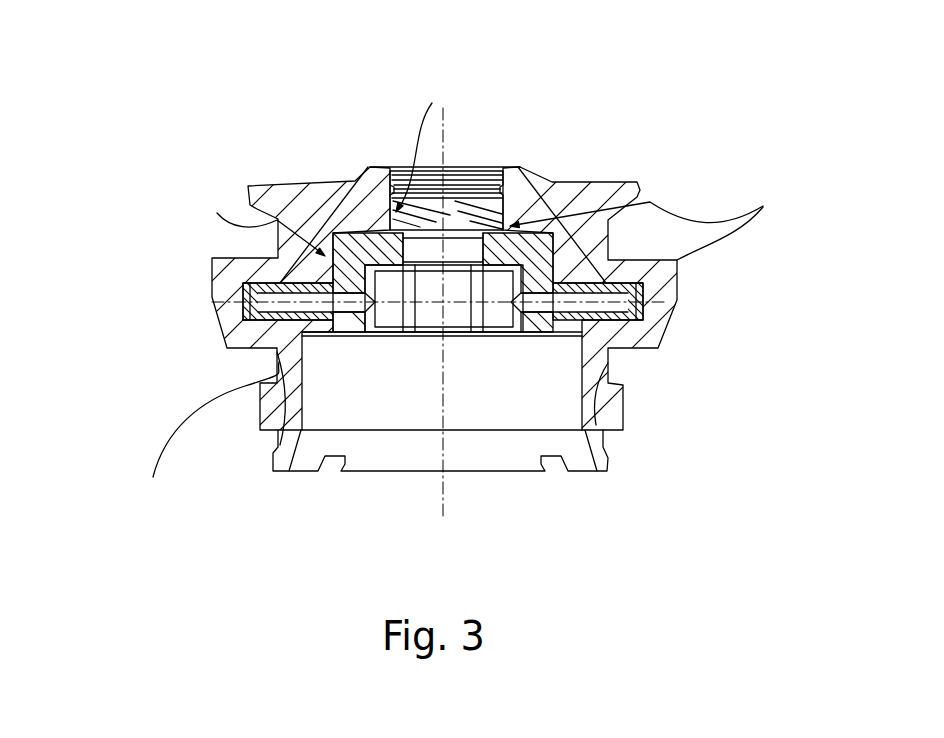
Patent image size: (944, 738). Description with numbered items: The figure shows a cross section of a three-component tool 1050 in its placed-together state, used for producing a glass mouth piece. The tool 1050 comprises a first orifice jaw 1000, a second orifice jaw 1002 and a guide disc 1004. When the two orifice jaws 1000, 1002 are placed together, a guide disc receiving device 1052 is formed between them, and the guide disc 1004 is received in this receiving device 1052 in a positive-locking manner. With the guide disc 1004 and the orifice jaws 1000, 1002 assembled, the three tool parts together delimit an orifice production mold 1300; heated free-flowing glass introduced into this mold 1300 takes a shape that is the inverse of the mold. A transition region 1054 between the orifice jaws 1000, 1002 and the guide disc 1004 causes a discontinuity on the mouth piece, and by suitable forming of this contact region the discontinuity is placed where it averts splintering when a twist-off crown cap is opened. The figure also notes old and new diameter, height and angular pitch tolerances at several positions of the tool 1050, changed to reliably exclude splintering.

The tool 1050 is at (434, 301).
The first orifice jaw 1000 is at (305, 202).
The guide disc 1004 is at (370, 473).
The second orifice jaw 1002 is at (522, 172).
The transition region 1054 is at (354, 240).
The orifice production mold 1300 is at (382, 228).
The guide disc receiving device 1052 is at (222, 291).